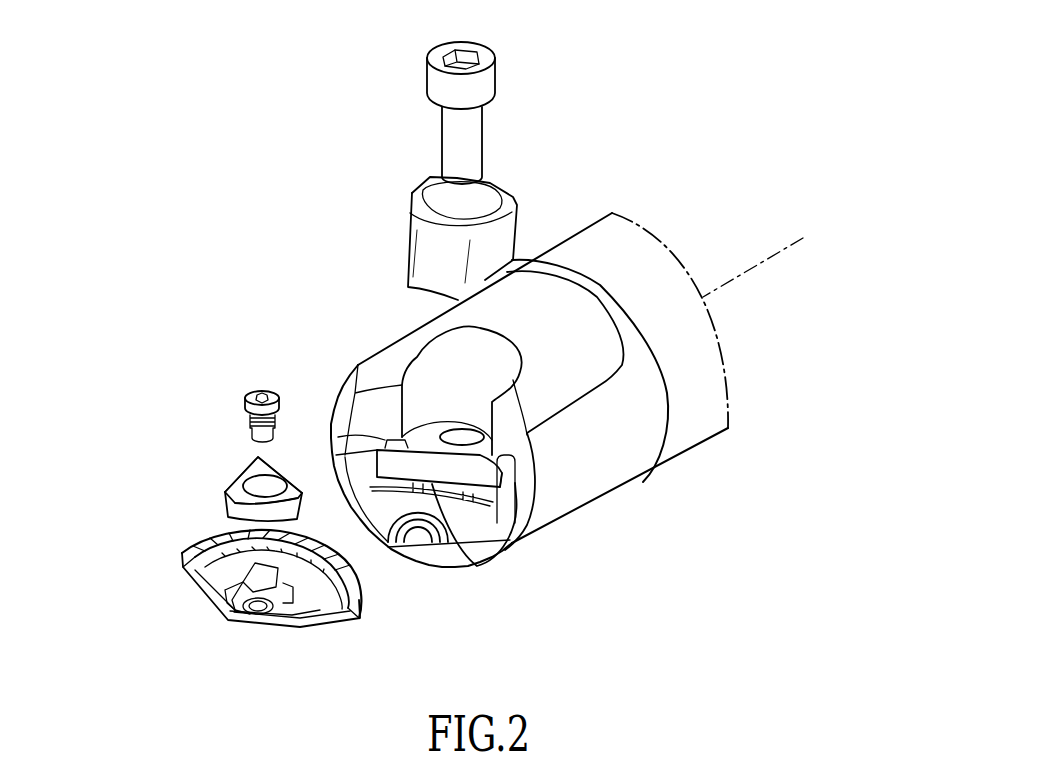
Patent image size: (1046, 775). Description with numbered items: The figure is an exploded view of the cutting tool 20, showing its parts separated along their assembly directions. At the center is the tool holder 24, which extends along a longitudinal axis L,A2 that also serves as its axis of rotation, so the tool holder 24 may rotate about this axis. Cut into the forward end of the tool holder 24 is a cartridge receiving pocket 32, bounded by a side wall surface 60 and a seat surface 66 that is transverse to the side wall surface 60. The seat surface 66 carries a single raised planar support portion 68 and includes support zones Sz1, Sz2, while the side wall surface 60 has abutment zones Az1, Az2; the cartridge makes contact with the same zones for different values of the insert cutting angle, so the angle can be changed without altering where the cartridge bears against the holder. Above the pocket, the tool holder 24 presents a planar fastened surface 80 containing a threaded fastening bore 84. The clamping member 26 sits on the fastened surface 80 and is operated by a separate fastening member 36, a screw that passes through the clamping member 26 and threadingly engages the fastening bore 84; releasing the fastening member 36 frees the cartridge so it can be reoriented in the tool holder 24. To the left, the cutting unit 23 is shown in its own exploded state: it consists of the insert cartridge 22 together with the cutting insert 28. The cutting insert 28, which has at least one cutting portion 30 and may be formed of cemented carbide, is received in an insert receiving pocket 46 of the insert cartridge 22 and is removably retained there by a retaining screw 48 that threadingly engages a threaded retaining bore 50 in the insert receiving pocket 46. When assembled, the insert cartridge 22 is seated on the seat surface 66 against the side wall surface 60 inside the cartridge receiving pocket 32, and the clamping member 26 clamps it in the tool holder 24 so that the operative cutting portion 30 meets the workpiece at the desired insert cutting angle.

The cutting tool 20 is at (353, 300).
The insert cartridge 22 is at (314, 597).
The cutting unit 23 is at (175, 592).
The tool holder 24 is at (601, 462).
The clamping member 26 is at (494, 240).
The cutting insert 28 is at (253, 514).
The cutting portion 30 is at (242, 455).
The cartridge receiving pocket 32 is at (416, 514).
The fastening member 36 is at (466, 142).
The insert receiving pocket 46 is at (240, 619).
The retaining screw 48 is at (246, 423).
The threaded retaining bore 50 is at (264, 622).
The side wall surface 60 is at (490, 477).
The seat surface 66 is at (463, 527).
The raised planar support portion 68 is at (409, 518).
The fastened surface 80 is at (422, 428).
The threaded fastening bore 84 is at (458, 430).
The abutment zone Az1 is at (408, 437).
The abutment zone Az2 is at (562, 455).
The support zone Sz1 is at (437, 484).
The support zone Sz2 is at (515, 470).
The longitudinal axis and axis of rotation L,A2 is at (783, 256).